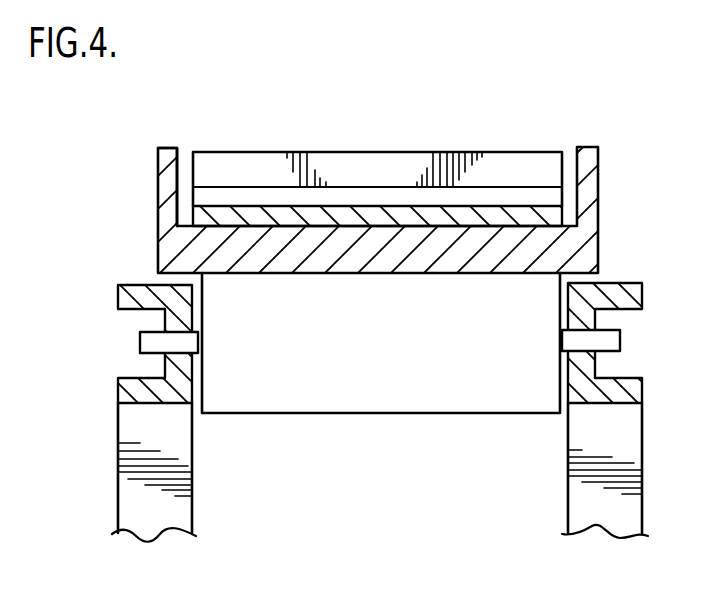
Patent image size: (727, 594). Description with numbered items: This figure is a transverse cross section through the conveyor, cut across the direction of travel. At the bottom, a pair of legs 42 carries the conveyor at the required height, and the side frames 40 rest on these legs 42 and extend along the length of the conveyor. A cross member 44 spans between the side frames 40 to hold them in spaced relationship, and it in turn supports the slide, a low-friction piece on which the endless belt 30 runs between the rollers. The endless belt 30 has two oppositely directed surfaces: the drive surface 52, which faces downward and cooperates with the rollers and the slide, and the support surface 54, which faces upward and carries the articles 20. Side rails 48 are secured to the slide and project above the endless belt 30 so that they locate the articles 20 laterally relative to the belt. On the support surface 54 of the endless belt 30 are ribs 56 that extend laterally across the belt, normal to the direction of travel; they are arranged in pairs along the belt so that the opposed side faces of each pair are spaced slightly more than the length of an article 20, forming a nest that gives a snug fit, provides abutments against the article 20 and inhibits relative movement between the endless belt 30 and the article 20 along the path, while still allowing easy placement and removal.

The article 20 is at (255, 158).
The endless belt 30 is at (337, 227).
The side frame 40 is at (120, 296).
The leg 42 is at (130, 485).
The cross member 44 is at (252, 253).
The side rail 48 is at (165, 163).
The drive surface 52 is at (448, 228).
The support surface 54 is at (405, 200).
The rib 56 is at (488, 190).